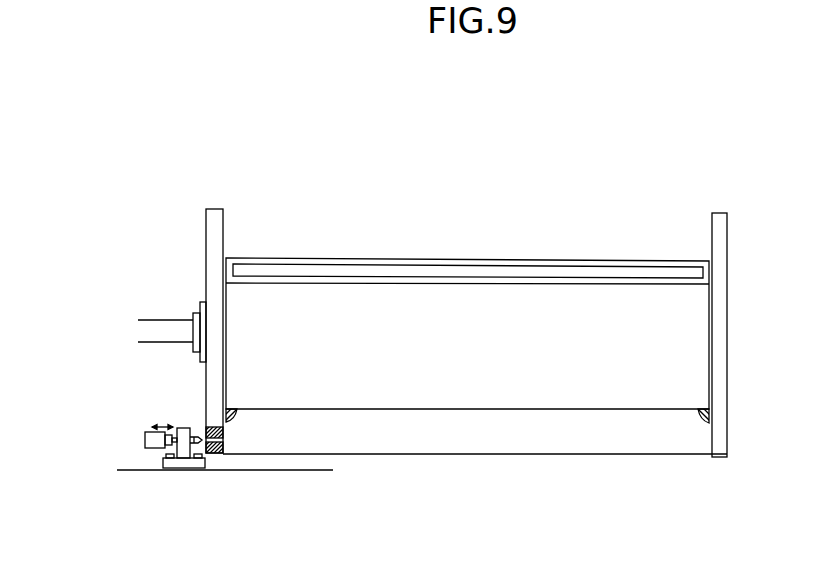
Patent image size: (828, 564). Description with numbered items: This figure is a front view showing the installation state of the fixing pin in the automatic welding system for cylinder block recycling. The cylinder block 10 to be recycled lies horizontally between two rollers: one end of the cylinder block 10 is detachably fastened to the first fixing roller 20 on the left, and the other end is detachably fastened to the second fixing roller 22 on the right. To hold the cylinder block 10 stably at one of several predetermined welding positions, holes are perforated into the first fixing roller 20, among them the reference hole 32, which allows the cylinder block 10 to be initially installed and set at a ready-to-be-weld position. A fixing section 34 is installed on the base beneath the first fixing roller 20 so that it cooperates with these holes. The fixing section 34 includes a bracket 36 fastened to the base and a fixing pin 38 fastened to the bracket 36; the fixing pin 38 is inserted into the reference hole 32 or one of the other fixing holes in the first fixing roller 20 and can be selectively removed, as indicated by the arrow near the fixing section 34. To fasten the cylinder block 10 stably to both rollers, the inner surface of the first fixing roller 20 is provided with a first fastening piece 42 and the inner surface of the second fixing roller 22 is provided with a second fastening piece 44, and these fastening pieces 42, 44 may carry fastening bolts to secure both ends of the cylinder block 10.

The cylinder block 10 is at (378, 273).
The first fixing roller 20 is at (217, 215).
The second fixing roller 22 is at (720, 218).
The reference hole 32 is at (223, 440).
The fixing section 34 is at (148, 422).
The bracket 36 is at (187, 467).
The fixing pin 38 is at (146, 441).
The first fastening piece 42 is at (230, 422).
The second fastening piece 44 is at (705, 423).